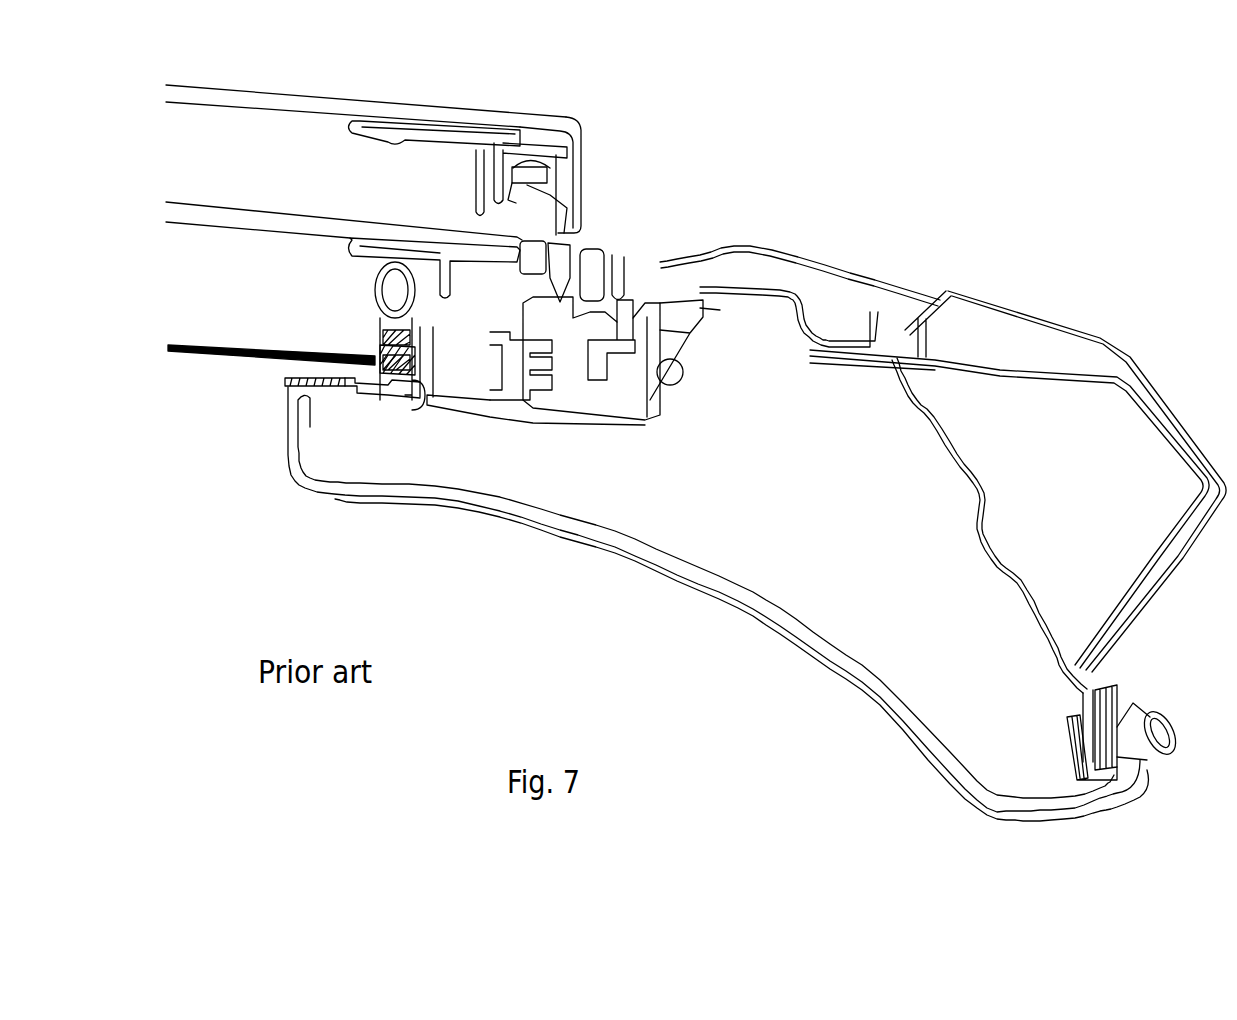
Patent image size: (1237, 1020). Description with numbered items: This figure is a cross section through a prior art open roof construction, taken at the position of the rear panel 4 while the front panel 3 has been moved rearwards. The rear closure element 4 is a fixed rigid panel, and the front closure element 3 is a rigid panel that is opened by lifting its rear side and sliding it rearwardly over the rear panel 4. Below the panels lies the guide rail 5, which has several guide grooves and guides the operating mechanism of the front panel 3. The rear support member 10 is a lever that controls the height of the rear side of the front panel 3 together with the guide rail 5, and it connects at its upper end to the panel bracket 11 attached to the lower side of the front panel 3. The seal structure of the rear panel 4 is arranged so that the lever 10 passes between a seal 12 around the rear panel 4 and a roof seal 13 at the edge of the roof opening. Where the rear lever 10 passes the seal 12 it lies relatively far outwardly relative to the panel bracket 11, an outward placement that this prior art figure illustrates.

The front closure element 3 is at (378, 110).
The rear closure element 4 is at (242, 220).
The guide rail 5 is at (660, 312).
The rear support member 10 is at (553, 240).
The panel bracket 11 is at (497, 150).
The seal 12 is at (548, 250).
The roof seal 13 is at (580, 252).